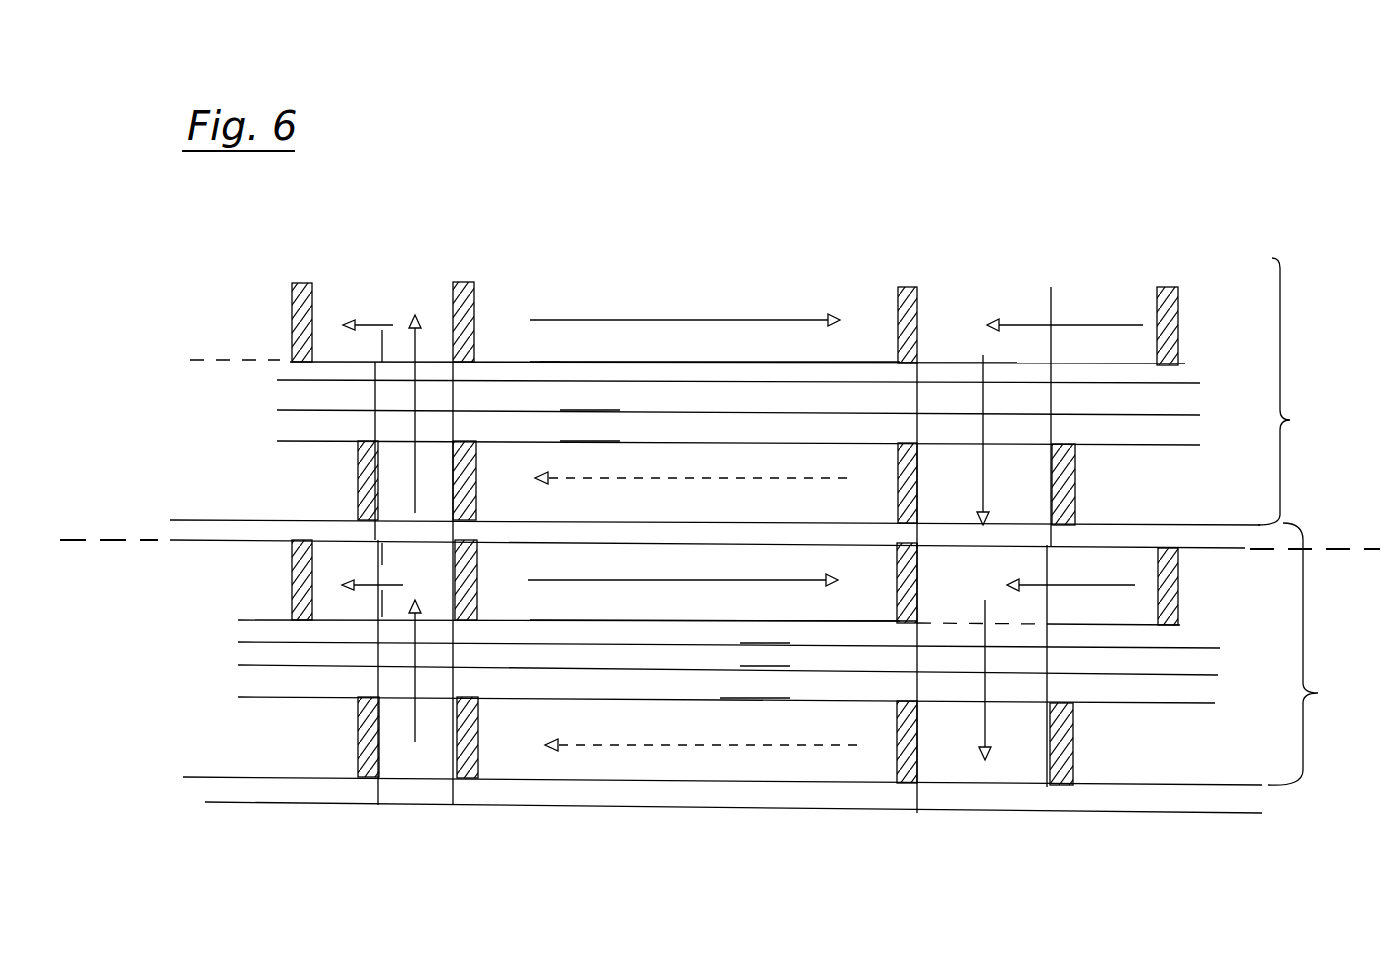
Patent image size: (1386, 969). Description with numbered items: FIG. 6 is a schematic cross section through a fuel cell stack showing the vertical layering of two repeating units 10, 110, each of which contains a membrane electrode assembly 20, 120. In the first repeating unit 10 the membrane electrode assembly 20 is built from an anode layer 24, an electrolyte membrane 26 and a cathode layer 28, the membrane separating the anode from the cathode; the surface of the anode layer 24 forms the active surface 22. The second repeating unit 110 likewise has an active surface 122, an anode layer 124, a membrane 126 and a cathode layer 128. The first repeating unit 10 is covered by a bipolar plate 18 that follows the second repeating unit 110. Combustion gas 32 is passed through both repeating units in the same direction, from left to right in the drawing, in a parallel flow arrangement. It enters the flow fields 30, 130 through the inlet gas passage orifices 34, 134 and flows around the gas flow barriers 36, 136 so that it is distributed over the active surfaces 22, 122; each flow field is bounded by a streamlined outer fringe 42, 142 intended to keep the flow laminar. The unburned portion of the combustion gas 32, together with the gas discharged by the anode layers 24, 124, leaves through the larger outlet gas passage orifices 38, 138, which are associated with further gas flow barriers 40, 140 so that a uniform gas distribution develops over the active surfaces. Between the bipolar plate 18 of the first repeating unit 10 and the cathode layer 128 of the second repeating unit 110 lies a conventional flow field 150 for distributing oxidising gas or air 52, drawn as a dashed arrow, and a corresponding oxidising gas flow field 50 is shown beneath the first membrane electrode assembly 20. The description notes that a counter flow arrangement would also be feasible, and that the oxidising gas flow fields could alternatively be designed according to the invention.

The first repeating unit 10 is at (756, 668).
The bipolar plate 18 is at (690, 543).
The membrane electrode assembly 20 is at (228, 625).
The active surface 22 is at (627, 622).
The anode layer 24 is at (772, 643).
The electrolyte membrane 26 is at (772, 666).
The cathode layer 28 is at (752, 694).
The flow field 30 is at (198, 545).
The combustion gas 32 is at (358, 320).
The gas passage orifice 34 is at (445, 617).
The gas flow barrier 36 is at (478, 572).
The gas passage orifice 38 is at (950, 620).
The gas flow barrier 40 is at (897, 572).
The outer fringe 42 is at (292, 578).
The coolant distribution layer 50 is at (230, 708).
The oxidising gas/air 52 is at (657, 482).
The second repeating unit 110 is at (720, 510).
The membrane electrode assembly 120 is at (255, 367).
The active surface 122 is at (653, 361).
The anode layer 124 is at (544, 366).
The membrane of second unit 126 is at (590, 395).
The cathode layer 128 is at (590, 428).
The flow field 130 is at (200, 272).
The gas passage orifice 134 is at (436, 358).
The gas flow barrier 136 is at (474, 305).
The gas passage orifice 138 is at (968, 365).
The seal element of second unit 140 is at (918, 307).
The edge seal of second unit 142 is at (292, 316).
The flow field 150 is at (258, 445).